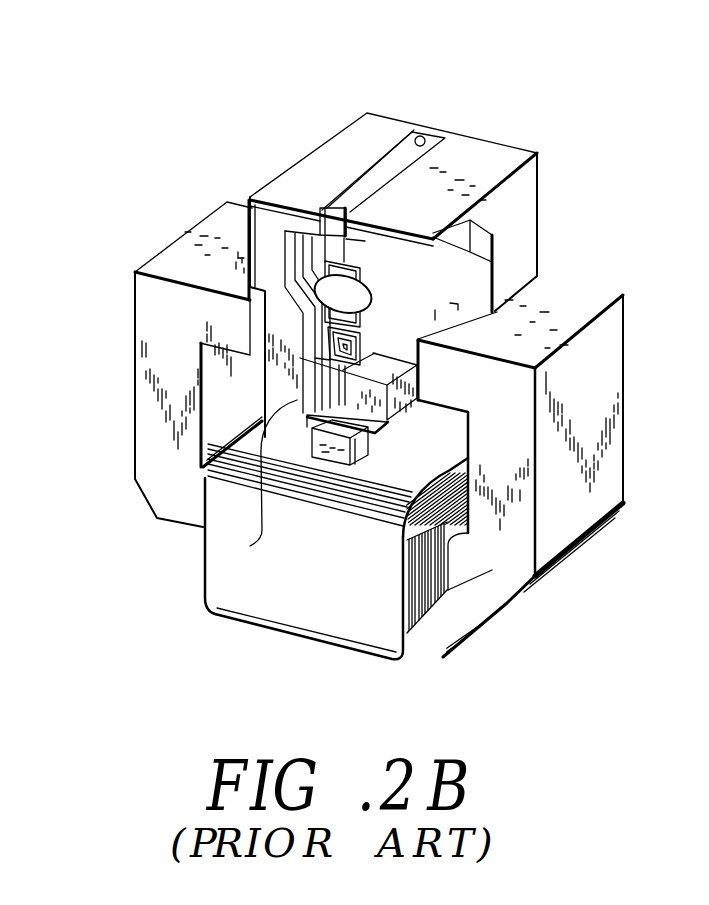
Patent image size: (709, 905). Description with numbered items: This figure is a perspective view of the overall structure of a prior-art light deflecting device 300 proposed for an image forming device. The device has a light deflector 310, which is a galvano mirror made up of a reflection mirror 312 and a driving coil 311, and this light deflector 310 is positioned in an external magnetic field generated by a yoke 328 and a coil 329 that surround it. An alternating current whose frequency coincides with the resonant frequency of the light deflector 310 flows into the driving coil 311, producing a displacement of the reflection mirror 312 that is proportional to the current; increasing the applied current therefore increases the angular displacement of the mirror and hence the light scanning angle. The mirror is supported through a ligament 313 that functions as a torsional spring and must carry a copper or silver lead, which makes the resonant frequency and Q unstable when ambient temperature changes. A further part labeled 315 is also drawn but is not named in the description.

The light deflecting device 300 is at (389, 111).
The light deflector 310 is at (327, 254).
The driving coil 311 is at (383, 351).
The reflection mirror 312 is at (375, 303).
The ligament 313 is at (345, 255).
The base 315 is at (296, 498).
The yoke 328 is at (590, 507).
The coil 329 is at (297, 602).